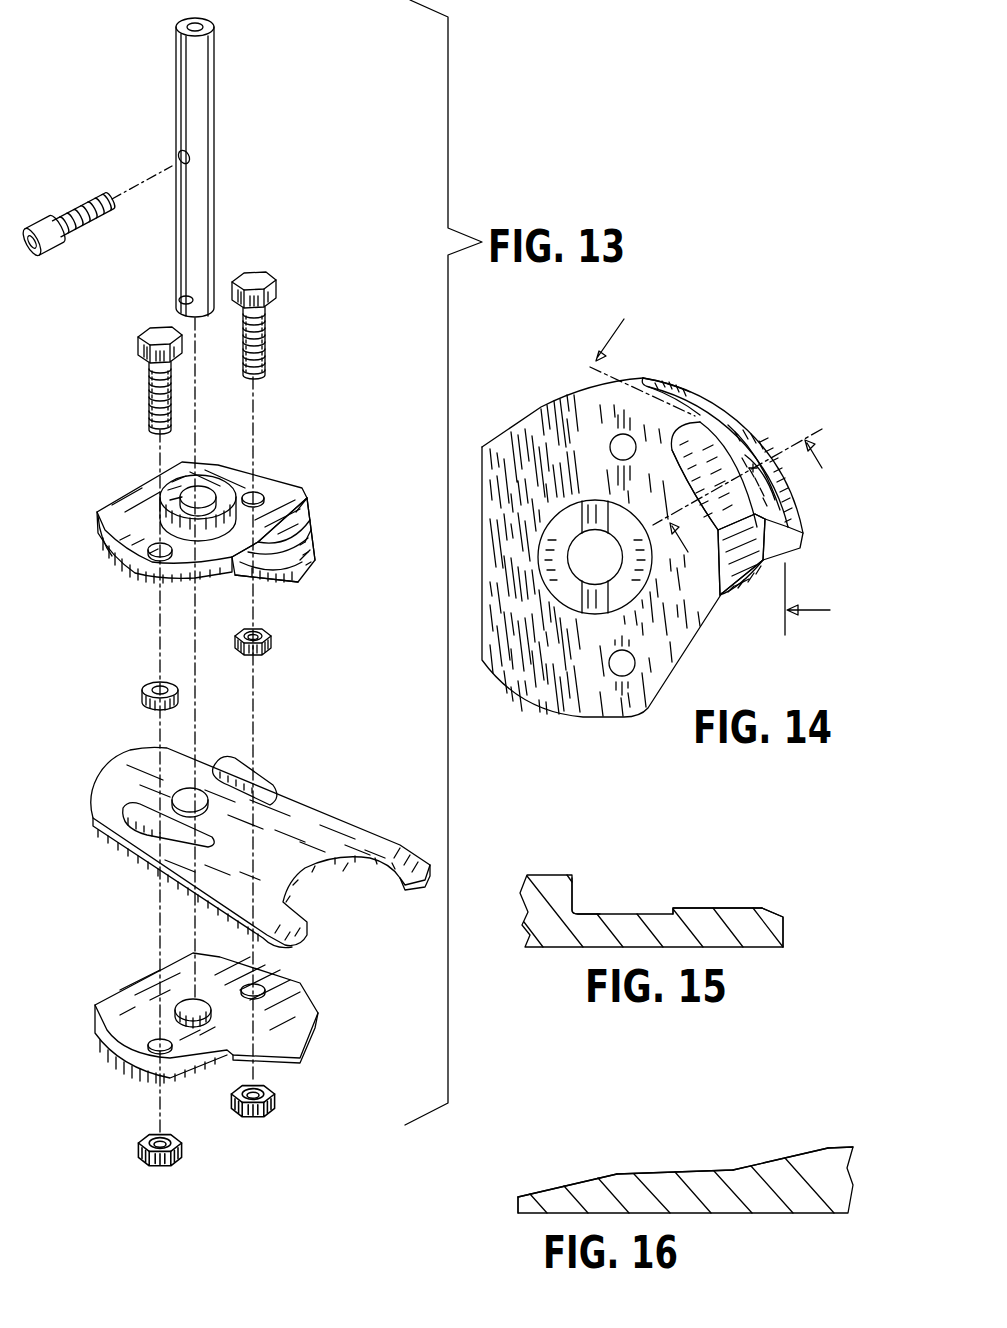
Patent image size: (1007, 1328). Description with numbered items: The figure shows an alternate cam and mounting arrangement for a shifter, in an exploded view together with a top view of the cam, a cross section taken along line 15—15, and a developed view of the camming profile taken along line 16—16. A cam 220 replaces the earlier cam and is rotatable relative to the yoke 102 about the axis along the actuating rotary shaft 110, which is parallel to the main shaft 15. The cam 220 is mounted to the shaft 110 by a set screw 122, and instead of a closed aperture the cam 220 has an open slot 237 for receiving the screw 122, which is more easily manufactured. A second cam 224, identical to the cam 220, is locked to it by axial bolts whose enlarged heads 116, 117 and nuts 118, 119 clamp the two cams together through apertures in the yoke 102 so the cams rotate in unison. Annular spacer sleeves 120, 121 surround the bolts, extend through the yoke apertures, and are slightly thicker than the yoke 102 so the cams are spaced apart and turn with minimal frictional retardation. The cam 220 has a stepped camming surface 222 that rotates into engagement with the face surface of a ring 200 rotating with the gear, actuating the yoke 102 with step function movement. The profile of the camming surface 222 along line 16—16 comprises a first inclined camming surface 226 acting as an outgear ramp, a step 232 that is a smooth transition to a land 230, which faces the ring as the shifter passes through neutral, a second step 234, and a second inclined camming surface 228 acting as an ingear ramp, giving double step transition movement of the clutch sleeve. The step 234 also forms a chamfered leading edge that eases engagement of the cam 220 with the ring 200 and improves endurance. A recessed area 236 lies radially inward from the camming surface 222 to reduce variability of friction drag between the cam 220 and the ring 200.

In FIG. 13, the yoke 102 is at (310, 786).
In FIG. 13, the actuating rotary shaft 110 is at (205, 128).
In FIG. 13, the enlarged head 116 is at (146, 394).
In FIG. 13, the enlarged head 117 is at (266, 356).
In FIG. 13, the nut 118 is at (138, 1160).
In FIG. 13, the nut 119 is at (274, 1105).
In FIG. 13, the annular spacer sleeve 120 is at (141, 699).
In FIG. 13, the annular spacer sleeve 121 is at (273, 645).
In FIG. 13, the set screw 122 is at (74, 212).
In FIG. 14, the ring 200 is at (541, 407).
In FIG. 13, the cam 220 is at (227, 545).
In FIG. 15, the cam 220 is at (525, 900).
In FIG. 13, the stepped camming surface 222 is at (307, 568).
In FIG. 14, the stepped camming surface 222 is at (794, 523).
In FIG. 15, the stepped camming surface 222 is at (695, 907).
In FIG. 16, the stepped camming surface 222 is at (685, 1180).
In FIG. 13, the cam 224 is at (113, 1052).
In FIG. 13, the first inclined camming surface 226 is at (277, 587).
In FIG. 14, the first inclined camming surface 226 is at (755, 585).
In FIG. 16, the first inclined camming surface 226 is at (547, 1190).
In FIG. 13, the second inclined camming surface 228 is at (307, 527).
In FIG. 14, the second inclined camming surface 228 is at (702, 468).
In FIG. 16, the second inclined camming surface 228 is at (802, 1152).
In FIG. 13, the land 230 is at (315, 543).
In FIG. 14, the land 230 is at (766, 481).
In FIG. 16, the land 230 is at (673, 1172).
In FIG. 13, the step 232 is at (315, 563).
In FIG. 16, the step 232 is at (613, 1175).
In FIG. 13, the step 234 is at (313, 527).
In FIG. 14, the step 234 is at (678, 395).
In FIG. 15, the step 234 is at (793, 883).
In FIG. 16, the step 234 is at (733, 1170).
In FIG. 14, the recessed area 236 is at (700, 450).
In FIG. 15, the recessed area 236 is at (606, 910).
In FIG. 13, the open slot 237 is at (98, 537).
In FIG. 14, the main shaft 15 is at (737, 481).
In FIG. 14, the section line 16- 16 is at (704, 477).